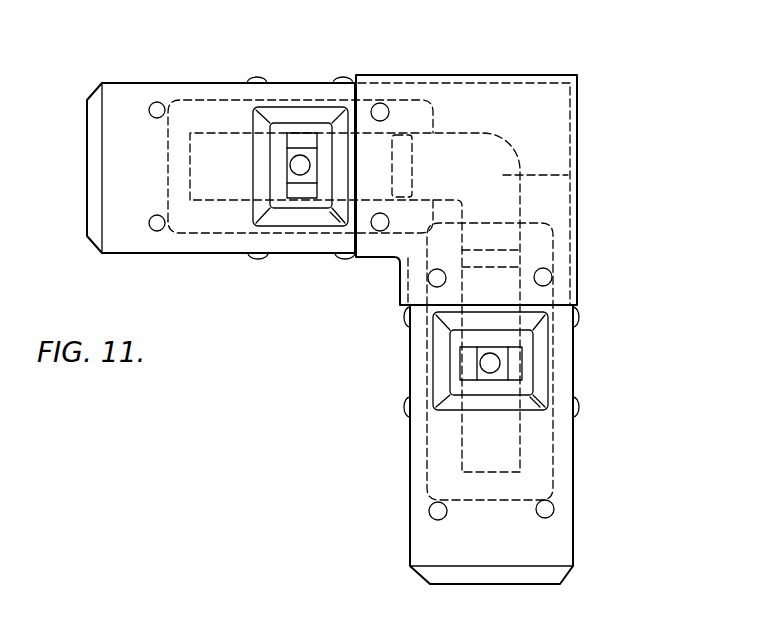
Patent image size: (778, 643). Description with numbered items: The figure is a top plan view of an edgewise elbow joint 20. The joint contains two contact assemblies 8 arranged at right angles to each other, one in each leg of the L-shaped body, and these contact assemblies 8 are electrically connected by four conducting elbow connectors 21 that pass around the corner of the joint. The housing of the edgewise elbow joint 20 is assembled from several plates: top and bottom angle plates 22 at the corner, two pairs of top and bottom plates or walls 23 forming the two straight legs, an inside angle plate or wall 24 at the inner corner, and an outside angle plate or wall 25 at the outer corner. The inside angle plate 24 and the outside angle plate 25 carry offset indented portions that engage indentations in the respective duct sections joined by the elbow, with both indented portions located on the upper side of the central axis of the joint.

The contact assembly 8 is at (190, 234).
The edgewise elbow joint 20 is at (314, 372).
The conducting elbow connector 21 is at (580, 182).
The angle plate 22 is at (578, 278).
The top and bottom plate 23 is at (128, 245).
The inside angle plate 24 is at (393, 282).
The outside angle plate 25 is at (582, 118).